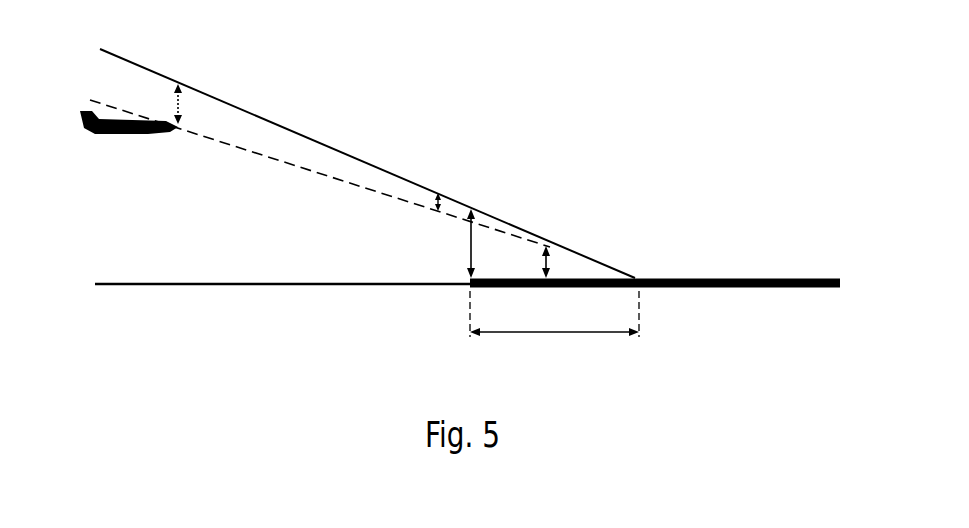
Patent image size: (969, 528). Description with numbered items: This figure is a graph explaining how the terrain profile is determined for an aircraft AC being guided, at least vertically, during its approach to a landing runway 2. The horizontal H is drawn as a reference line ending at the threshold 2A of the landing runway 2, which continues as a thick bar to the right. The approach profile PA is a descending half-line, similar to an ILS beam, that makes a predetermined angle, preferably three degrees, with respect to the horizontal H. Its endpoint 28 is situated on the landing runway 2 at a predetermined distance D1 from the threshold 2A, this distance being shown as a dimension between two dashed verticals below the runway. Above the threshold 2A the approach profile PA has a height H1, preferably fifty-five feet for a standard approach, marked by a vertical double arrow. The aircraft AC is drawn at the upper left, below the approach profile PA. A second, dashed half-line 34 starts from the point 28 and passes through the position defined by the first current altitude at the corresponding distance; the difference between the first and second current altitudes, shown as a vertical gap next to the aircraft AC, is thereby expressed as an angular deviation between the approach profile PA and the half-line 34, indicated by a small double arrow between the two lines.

The landing runway 2 is at (757, 290).
The threshold of the landing runway 2A is at (467, 288).
The endpoint 28 is at (640, 278).
The half-line 34 is at (290, 164).
The approach profile PA is at (313, 138).
The aircraft AC is at (129, 134).
The horizontal H is at (130, 286).
The height H1 is at (467, 248).
The predetermined distance D1 is at (554, 314).